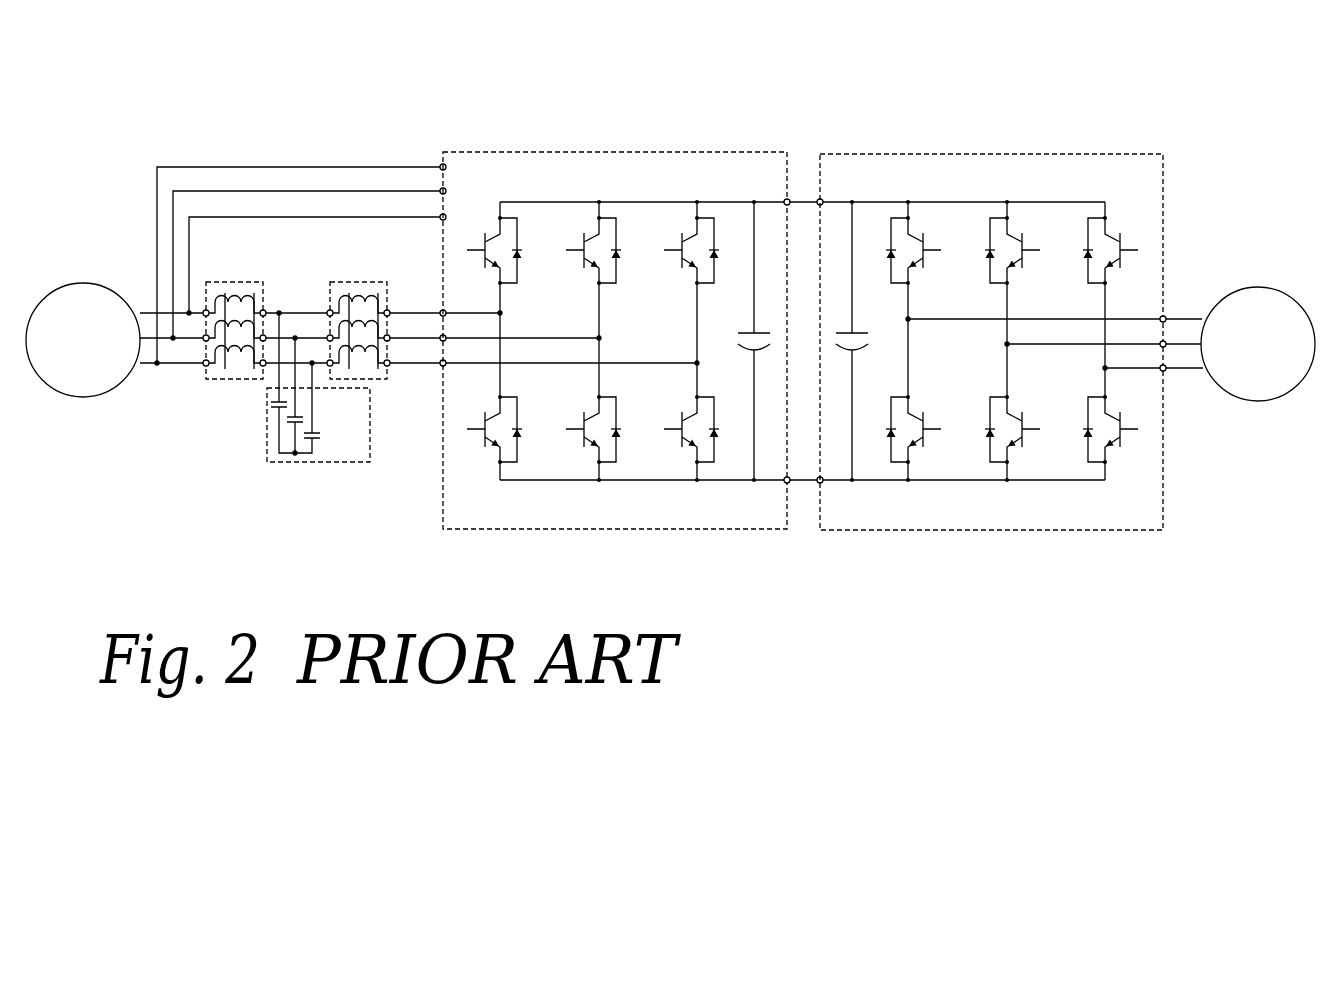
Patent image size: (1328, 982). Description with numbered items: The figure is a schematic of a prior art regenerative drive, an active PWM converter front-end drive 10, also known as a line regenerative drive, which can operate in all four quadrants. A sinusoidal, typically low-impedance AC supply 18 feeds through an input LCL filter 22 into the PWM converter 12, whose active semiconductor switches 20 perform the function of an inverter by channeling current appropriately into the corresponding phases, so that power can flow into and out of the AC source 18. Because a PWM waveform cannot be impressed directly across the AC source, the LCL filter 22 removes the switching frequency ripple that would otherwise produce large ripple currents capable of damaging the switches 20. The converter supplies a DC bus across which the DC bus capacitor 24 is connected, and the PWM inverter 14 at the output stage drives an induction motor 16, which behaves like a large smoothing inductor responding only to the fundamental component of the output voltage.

The active PWM converter front-end drive 10 is at (892, 57).
The PWM converter 12 is at (737, 152).
The PWM inverter 14 is at (1103, 154).
The induction motor 16 is at (1263, 287).
The AC supply 18 is at (100, 282).
The switches 20 is at (705, 505).
The input LCL filter 22 is at (248, 405).
The DC bus capacitor 24 is at (859, 329).